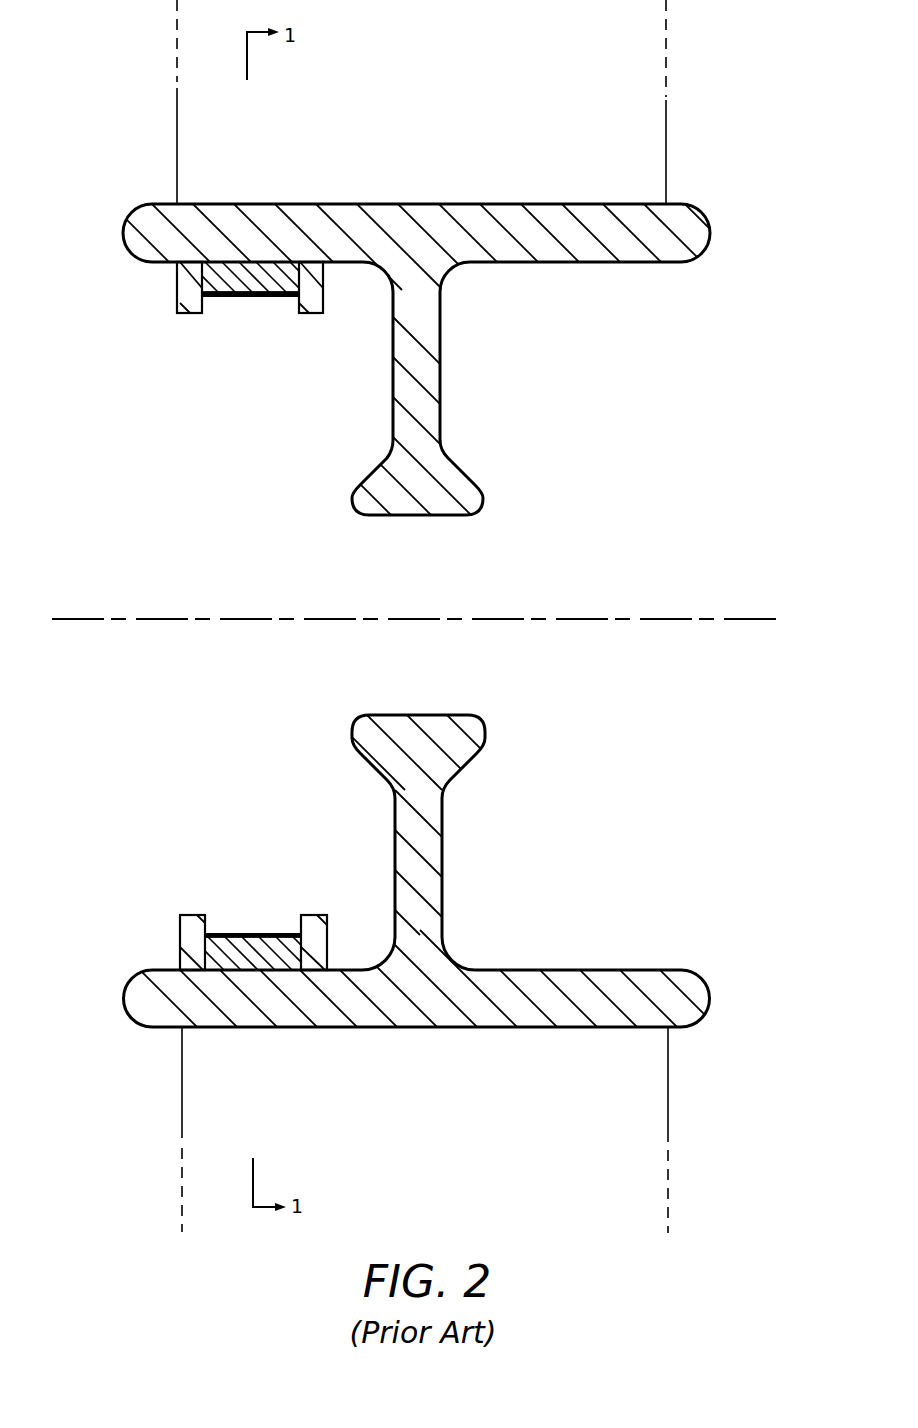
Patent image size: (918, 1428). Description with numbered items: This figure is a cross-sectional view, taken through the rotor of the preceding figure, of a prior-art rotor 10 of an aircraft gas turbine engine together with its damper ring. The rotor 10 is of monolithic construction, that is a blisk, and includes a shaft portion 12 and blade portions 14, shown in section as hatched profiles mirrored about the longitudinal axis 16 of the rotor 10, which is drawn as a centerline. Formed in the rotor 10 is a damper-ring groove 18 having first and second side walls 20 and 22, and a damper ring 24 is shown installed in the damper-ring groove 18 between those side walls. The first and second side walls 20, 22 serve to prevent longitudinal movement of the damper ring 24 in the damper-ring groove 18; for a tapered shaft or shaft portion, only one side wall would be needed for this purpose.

The rotor 10 is at (678, 203).
The shaft portion 12 is at (433, 267).
The blade portions 14 is at (603, 112).
The longitudinal axis 16 is at (580, 619).
The damper-ring groove 18 is at (233, 316).
The first side wall 20 is at (192, 292).
The second side wall 22 is at (313, 294).
The damper ring 24 is at (245, 295).